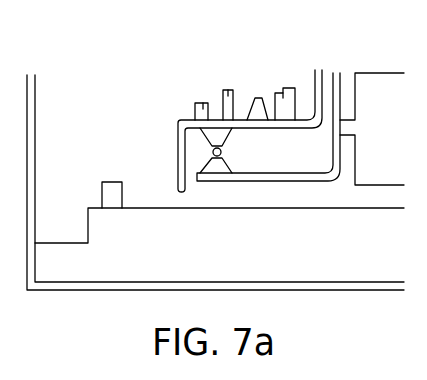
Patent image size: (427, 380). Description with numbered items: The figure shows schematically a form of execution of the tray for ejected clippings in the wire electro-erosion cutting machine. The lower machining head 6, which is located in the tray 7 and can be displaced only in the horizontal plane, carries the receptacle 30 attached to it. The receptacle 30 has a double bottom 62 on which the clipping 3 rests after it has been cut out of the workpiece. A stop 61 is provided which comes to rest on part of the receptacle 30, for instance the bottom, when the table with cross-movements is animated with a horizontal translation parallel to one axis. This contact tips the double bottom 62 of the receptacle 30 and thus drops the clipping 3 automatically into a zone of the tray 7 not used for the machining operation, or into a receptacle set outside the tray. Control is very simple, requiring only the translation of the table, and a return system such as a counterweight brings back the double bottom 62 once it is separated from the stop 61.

The tray 7 is at (36, 101).
The stop 61 is at (113, 187).
The double bottom 62 is at (321, 72).
The clipping 3 is at (277, 92).
The receptacle 30 is at (338, 73).
The lower machining head 6 is at (385, 80).